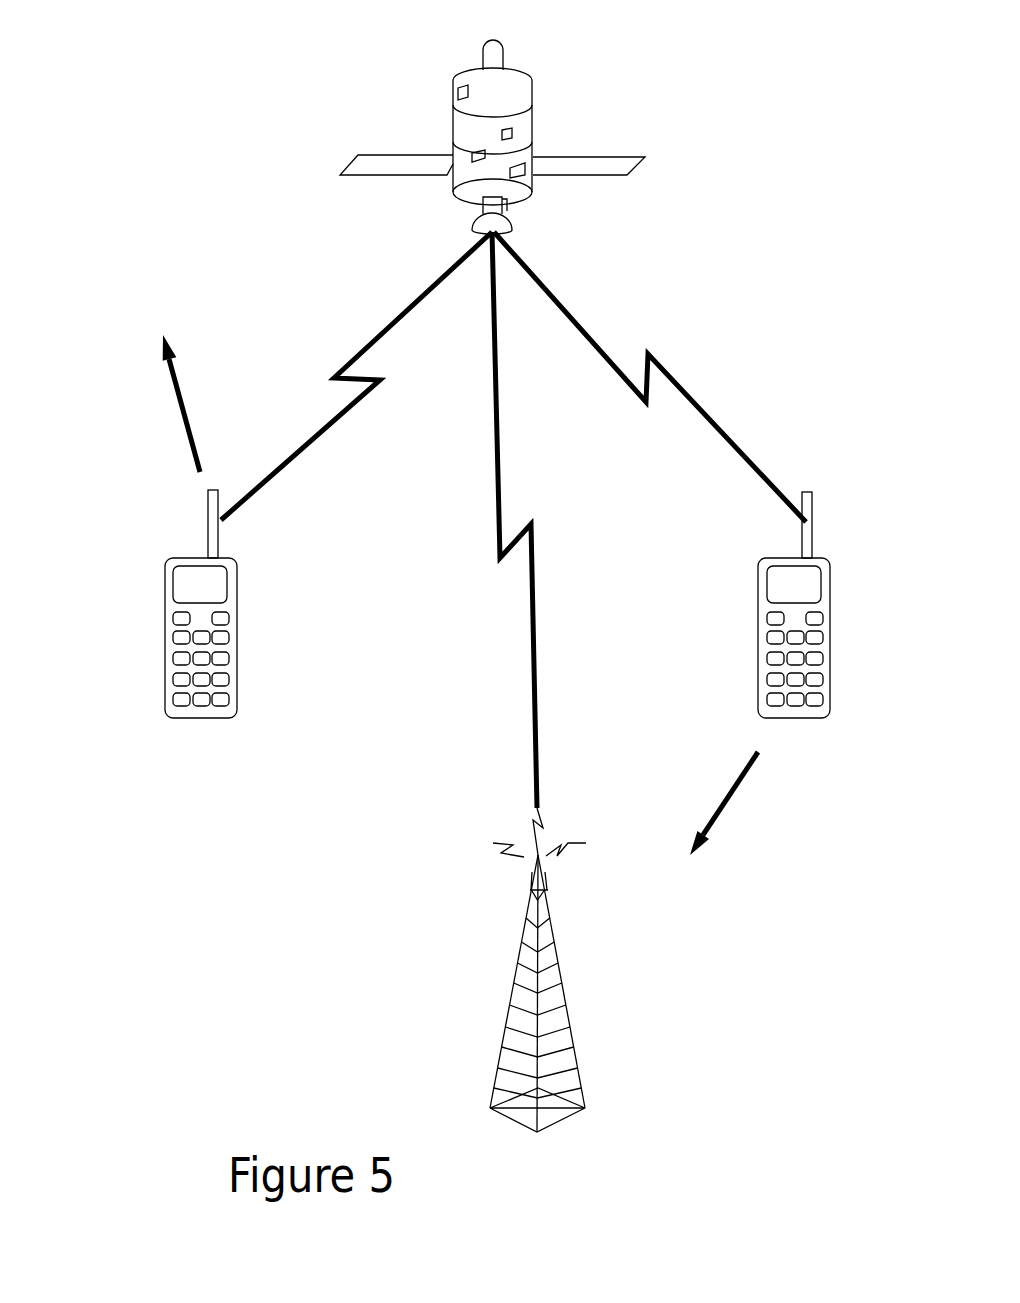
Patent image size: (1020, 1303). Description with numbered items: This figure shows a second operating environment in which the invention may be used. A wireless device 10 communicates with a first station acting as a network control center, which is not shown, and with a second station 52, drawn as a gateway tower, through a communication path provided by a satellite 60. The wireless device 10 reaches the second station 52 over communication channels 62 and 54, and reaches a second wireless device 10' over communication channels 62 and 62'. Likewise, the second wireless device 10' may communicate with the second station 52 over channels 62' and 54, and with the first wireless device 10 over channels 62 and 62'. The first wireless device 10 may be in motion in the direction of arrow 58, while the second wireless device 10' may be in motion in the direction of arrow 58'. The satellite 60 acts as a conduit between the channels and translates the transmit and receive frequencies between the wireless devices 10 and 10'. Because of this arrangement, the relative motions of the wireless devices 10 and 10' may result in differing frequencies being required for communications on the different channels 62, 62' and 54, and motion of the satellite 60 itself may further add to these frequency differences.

The satellite 60 is at (417, 83).
The communication channel 62 is at (356, 376).
The communication channel 62' is at (650, 377).
The communication channel 54 is at (495, 542).
The arrow 58 is at (144, 403).
The arrow 58' is at (759, 820).
The wireless device 10 is at (151, 604).
The second wireless device 10' is at (843, 605).
The second station 52 is at (487, 958).